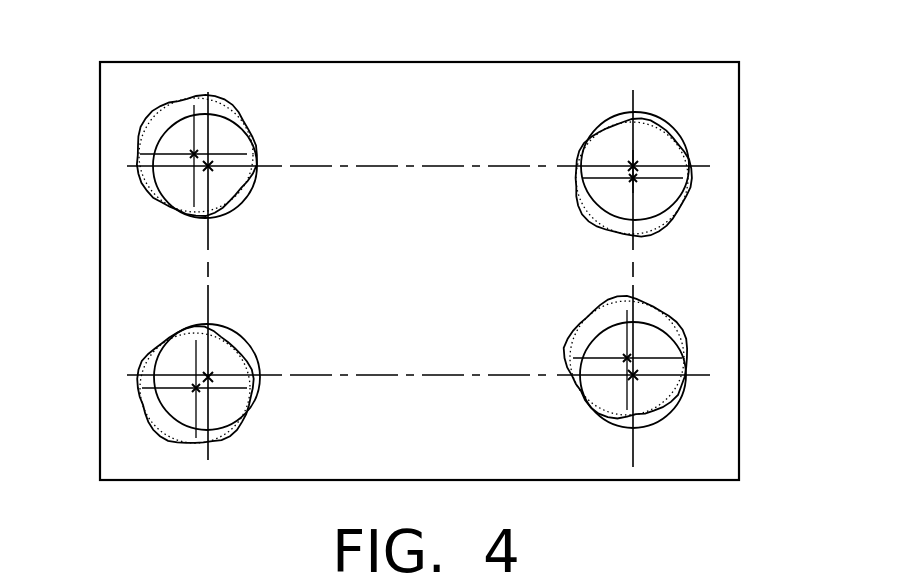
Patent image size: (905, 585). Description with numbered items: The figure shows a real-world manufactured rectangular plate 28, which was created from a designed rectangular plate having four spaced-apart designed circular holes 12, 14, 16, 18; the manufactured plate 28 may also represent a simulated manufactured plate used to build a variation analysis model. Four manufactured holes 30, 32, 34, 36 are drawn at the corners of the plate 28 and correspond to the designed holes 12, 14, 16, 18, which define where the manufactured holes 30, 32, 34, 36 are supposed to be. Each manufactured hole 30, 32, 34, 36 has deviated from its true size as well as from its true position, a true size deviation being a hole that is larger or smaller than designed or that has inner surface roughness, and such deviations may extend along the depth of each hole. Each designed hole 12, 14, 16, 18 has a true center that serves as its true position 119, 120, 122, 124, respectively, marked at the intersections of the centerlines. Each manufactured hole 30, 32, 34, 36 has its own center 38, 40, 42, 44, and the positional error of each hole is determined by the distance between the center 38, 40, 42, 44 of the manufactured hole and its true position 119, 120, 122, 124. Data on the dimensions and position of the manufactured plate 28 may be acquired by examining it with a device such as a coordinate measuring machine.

The manufactured rectangular plate 28 is at (468, 78).
The designed circular hole 12 is at (215, 127).
The designed circular hole 14 is at (653, 140).
The designed circular hole 16 is at (660, 352).
The designed circular hole 18 is at (173, 358).
The manufactured hole 30 is at (181, 110).
The manufactured hole 32 is at (677, 207).
The manufactured hole 34 is at (675, 328).
The manufactured hole 36 is at (153, 408).
The center of manufactured hole 38 is at (194, 154).
The center of manufactured hole 40 is at (636, 181).
The center of manufactured hole 42 is at (638, 380).
The center of manufactured hole 44 is at (196, 390).
The true position 119 is at (210, 165).
The true position 120 is at (632, 165).
The true position 122 is at (625, 360).
The true position 124 is at (210, 374).